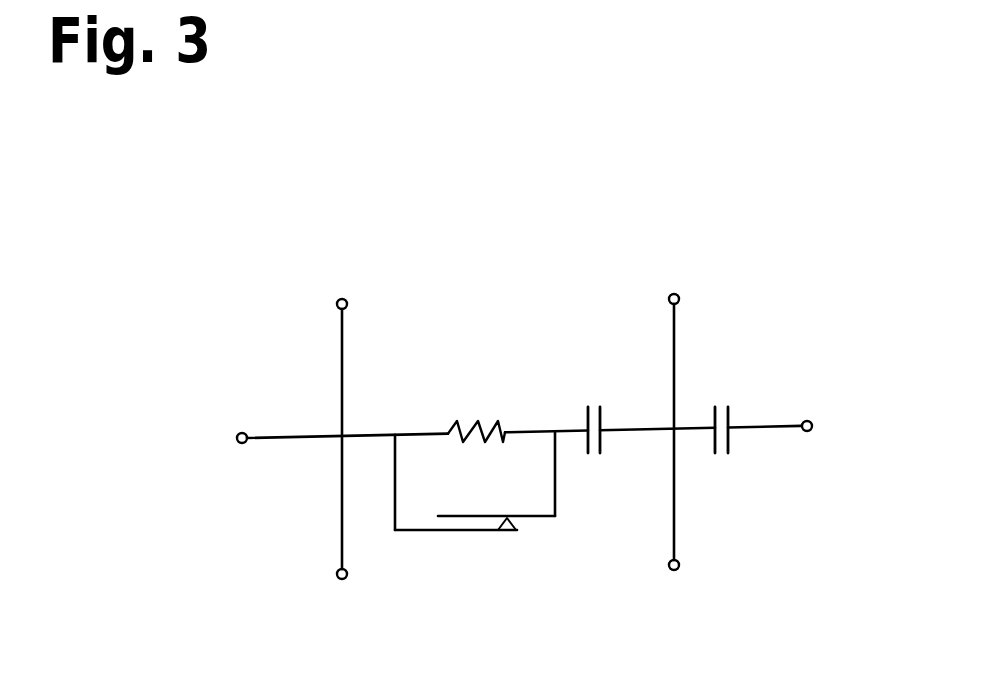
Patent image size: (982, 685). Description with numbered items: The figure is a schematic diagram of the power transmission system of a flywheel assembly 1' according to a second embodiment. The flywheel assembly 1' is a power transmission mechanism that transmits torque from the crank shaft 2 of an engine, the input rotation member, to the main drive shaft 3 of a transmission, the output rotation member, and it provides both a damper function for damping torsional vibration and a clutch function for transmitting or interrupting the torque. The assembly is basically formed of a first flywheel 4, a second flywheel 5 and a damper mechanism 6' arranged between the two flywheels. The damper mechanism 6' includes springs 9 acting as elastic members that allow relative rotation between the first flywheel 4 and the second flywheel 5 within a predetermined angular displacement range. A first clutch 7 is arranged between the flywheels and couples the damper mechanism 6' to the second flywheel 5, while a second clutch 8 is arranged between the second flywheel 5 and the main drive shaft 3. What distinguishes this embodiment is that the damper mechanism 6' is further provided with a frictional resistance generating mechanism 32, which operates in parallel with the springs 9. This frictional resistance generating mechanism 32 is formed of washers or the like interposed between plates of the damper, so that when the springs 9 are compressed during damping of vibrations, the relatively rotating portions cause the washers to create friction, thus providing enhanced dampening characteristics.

The flywheel assembly 1' is at (524, 324).
The crank shaft 2 is at (236, 437).
The main drive shaft 3 is at (813, 426).
The first flywheel 4 is at (342, 340).
The second flywheel 5 is at (674, 345).
The damper mechanism 6' is at (475, 410).
The first clutch 7 is at (590, 397).
The second clutch 8 is at (735, 391).
The springs 9 is at (478, 420).
The frictional resistance generating mechanism 32 is at (487, 534).